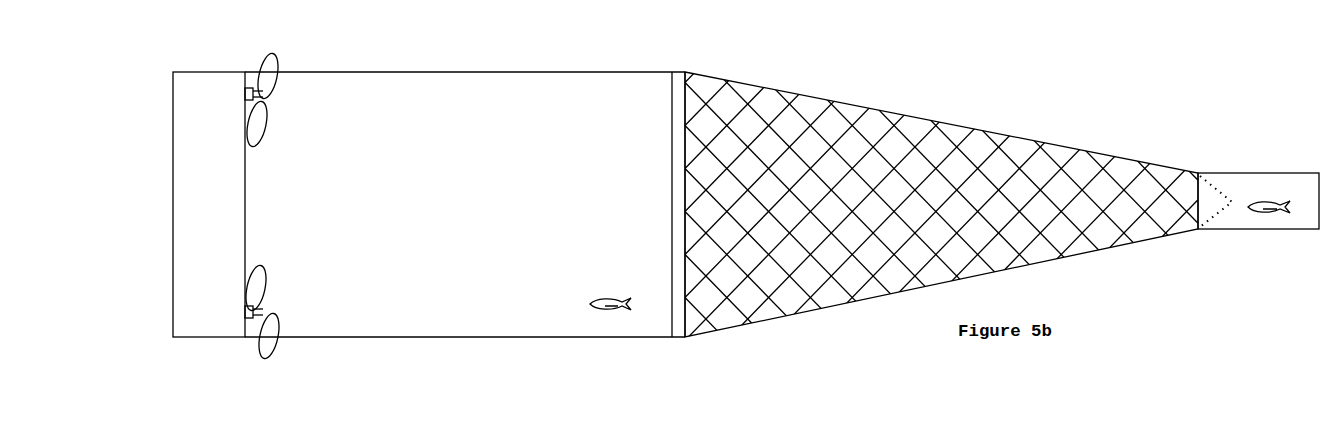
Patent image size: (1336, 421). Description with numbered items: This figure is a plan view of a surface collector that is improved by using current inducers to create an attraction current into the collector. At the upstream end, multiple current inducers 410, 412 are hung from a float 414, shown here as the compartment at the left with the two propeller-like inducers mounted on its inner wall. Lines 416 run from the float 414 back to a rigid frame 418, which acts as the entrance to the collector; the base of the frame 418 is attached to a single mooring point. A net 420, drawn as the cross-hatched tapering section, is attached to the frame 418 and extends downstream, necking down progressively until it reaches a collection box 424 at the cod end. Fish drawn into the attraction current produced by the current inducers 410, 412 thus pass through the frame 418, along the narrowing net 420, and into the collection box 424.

The current inducer 410 is at (266, 128).
The current inducer 412 is at (266, 286).
The float 414 is at (200, 207).
The lines 416 is at (487, 67).
The rigid frame 418 is at (673, 196).
The net 420 is at (893, 147).
The collection box 424 is at (1240, 170).